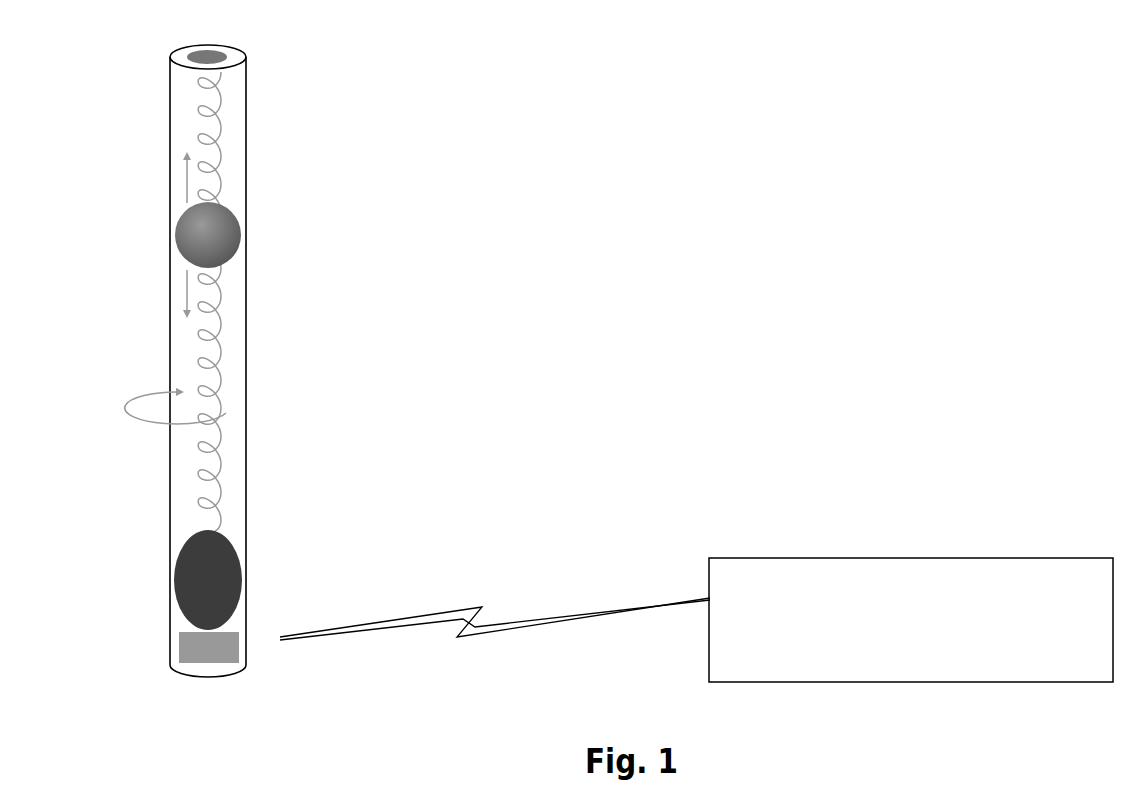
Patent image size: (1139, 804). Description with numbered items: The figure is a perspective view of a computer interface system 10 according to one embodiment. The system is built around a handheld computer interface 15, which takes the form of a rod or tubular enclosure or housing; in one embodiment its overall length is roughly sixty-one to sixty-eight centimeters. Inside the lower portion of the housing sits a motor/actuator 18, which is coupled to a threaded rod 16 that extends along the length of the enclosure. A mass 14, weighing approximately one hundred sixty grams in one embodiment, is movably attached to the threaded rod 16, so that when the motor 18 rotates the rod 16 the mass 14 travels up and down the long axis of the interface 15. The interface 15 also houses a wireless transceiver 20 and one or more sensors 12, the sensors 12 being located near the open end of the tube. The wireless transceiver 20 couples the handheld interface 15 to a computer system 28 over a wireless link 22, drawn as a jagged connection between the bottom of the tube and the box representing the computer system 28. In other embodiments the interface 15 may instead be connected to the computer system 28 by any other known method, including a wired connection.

The computer interface system 10 is at (712, 173).
The sensors 12 is at (230, 58).
The mass 14 is at (226, 216).
The handheld computer interface 15 is at (245, 307).
The threaded rod 16 is at (217, 445).
The motor/actuator 18 is at (238, 551).
The wireless transceiver 20 is at (228, 645).
The wireless link 22 is at (540, 618).
The computer system 28 is at (911, 620).